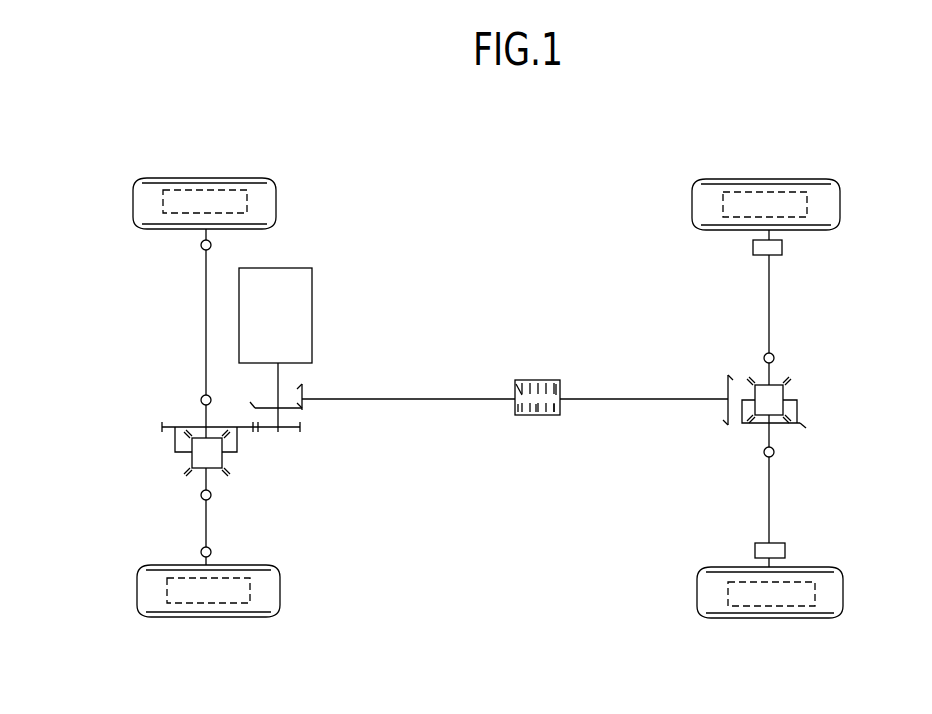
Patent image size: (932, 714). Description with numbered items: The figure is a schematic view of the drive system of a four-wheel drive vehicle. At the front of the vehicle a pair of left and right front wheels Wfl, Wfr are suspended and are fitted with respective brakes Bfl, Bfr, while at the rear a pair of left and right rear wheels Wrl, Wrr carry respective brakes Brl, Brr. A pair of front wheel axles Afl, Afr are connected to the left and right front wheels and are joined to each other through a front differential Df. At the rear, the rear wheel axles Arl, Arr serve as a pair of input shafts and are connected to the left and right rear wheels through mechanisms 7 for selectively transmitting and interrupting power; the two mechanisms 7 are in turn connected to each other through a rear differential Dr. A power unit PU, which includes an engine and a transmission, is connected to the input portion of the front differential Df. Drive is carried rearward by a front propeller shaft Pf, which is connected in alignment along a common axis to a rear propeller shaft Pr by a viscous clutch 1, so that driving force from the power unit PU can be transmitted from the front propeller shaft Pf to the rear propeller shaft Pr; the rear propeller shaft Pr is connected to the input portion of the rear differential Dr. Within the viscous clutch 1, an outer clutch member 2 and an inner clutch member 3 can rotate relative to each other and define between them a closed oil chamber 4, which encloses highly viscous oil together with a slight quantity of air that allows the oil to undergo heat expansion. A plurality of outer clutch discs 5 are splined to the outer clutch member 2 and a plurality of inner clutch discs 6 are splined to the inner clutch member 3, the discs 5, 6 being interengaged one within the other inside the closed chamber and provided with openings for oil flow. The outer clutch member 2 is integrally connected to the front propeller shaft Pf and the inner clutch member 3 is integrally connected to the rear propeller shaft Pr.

The right front wheel Wfr is at (276, 201).
The left front wheel Wfl is at (280, 590).
The right rear wheel Wrr is at (840, 203).
The left rear wheel Wrl is at (843, 592).
The brake Bfr is at (196, 190).
The brake Bfl is at (212, 603).
The brake Brr is at (758, 192).
The brake Brl is at (773, 606).
The front wheel axle Afr is at (206, 328).
The front wheel axle Afl is at (206, 523).
The rear wheel axle Arr is at (770, 322).
The rear wheel axle Arl is at (770, 502).
The front differential Df is at (232, 463).
The rear differential Dr is at (803, 391).
The power unit PU is at (283, 343).
The front propeller shaft Pf is at (401, 396).
The rear propeller shaft Pr is at (649, 396).
The viscous clutch 1 is at (540, 379).
The outer clutch member 2 is at (554, 383).
The inner clutch member 3 is at (554, 413).
The closed oil chamber 4 is at (517, 413).
The outer clutch discs 5 is at (535, 413).
The inner clutch discs 6 is at (518, 384).
The mechanism for selectively transmitting and interrupting power 7 is at (753, 248).